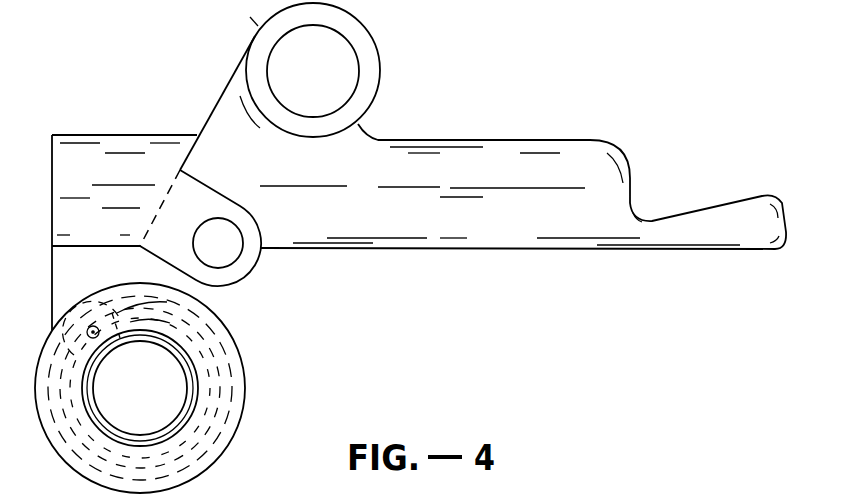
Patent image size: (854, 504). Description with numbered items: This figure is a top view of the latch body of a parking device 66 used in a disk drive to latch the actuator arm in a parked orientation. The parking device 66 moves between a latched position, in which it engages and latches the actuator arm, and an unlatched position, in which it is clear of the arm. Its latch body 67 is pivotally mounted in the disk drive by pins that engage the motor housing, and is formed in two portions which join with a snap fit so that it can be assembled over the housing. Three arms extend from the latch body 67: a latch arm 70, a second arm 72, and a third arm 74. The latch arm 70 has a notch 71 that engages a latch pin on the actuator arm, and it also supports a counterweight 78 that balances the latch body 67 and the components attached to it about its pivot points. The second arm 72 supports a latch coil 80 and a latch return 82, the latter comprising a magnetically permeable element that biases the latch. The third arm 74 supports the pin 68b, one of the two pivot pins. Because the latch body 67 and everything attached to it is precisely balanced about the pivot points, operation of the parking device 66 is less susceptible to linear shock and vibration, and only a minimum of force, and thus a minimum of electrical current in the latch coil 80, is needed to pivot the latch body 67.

The parking device 66 is at (507, 86).
The latch body 67 is at (128, 147).
The pin 68b is at (222, 253).
The latch arm 70 is at (500, 246).
The notch 71 is at (665, 181).
The second arm 72 is at (96, 262).
The third arm 74 is at (247, 260).
The counterweight 78 is at (345, 68).
The latch coil 80 is at (230, 403).
The latch return 82 is at (222, 318).